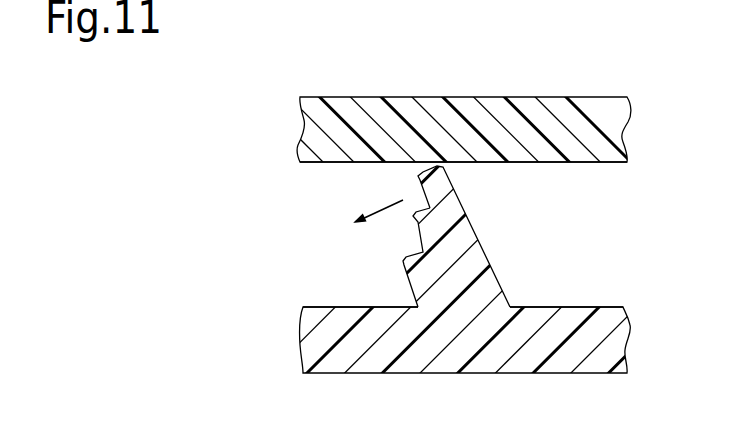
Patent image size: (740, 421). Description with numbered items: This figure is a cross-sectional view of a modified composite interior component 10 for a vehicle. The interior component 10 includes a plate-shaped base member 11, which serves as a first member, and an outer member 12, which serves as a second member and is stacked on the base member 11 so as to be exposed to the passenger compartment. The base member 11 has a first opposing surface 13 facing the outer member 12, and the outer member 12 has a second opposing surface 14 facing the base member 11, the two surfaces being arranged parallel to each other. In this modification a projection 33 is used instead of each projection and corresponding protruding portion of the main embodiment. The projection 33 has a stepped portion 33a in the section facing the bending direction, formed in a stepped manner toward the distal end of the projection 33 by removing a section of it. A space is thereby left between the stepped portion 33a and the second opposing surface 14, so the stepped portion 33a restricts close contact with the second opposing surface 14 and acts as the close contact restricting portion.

The interior component 10 is at (238, 97).
The base member 11 is at (625, 139).
The outer member 12 is at (625, 342).
The first opposing surface 13 is at (318, 166).
The second opposing surface 14 is at (318, 307).
The projection 33 is at (470, 225).
The stepped portion 33a is at (416, 244).